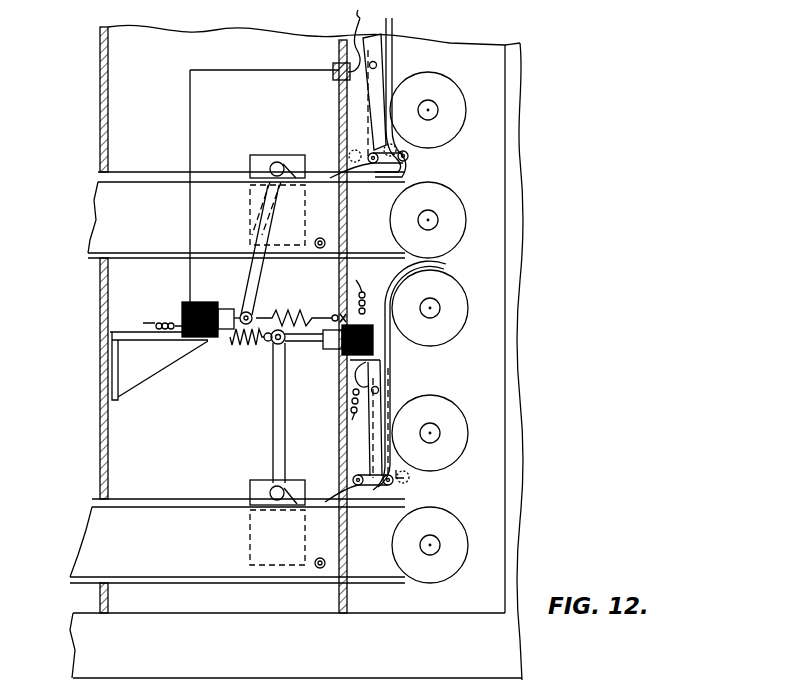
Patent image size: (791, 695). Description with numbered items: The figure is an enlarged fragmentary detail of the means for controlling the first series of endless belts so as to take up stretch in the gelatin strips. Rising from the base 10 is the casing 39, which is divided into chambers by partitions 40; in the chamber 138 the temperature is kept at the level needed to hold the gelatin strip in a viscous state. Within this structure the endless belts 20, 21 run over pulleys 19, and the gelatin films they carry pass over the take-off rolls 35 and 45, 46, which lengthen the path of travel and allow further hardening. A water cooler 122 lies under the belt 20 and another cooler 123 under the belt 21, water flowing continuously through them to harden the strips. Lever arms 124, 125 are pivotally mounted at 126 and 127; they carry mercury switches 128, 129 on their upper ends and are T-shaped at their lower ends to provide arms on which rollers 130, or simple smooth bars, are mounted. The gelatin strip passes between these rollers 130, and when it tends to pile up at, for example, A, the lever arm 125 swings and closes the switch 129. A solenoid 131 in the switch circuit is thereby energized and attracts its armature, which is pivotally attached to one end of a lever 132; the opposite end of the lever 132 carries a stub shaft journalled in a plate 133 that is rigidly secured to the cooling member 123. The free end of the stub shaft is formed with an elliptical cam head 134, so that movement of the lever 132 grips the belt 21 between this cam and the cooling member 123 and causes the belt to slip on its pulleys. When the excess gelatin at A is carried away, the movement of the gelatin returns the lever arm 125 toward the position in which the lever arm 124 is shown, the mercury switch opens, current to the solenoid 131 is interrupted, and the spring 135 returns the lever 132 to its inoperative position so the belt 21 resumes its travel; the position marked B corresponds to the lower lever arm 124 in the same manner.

The base 10 is at (505, 643).
The pulleys 19 is at (455, 212).
The endless belt 20 is at (170, 584).
The endless belt 21 is at (153, 258).
The take-off roll 35 is at (442, 94).
The casing 39 is at (108, 602).
The partitions 40 is at (345, 605).
The take-off roll 45 is at (448, 415).
The take-off roll 46 is at (448, 292).
The water cooler 122 is at (175, 520).
The cooling member 123 is at (153, 190).
The lever arm 124 is at (368, 432).
The lever arm 125 is at (368, 93).
The pivot 126 is at (378, 389).
The pivot 127 is at (378, 66).
The mercury switch 128 is at (385, 362).
The mercury switch 129 is at (388, 36).
The rollers 130 is at (400, 161).
The solenoid 131 is at (222, 293).
The lever 132 is at (255, 287).
The plate 133 is at (250, 165).
The elliptical cam head 134 is at (285, 176).
The spring 135 is at (302, 323).
The chamber 138 is at (130, 88).
The point of piling up A is at (402, 166).
The position B is at (380, 497).